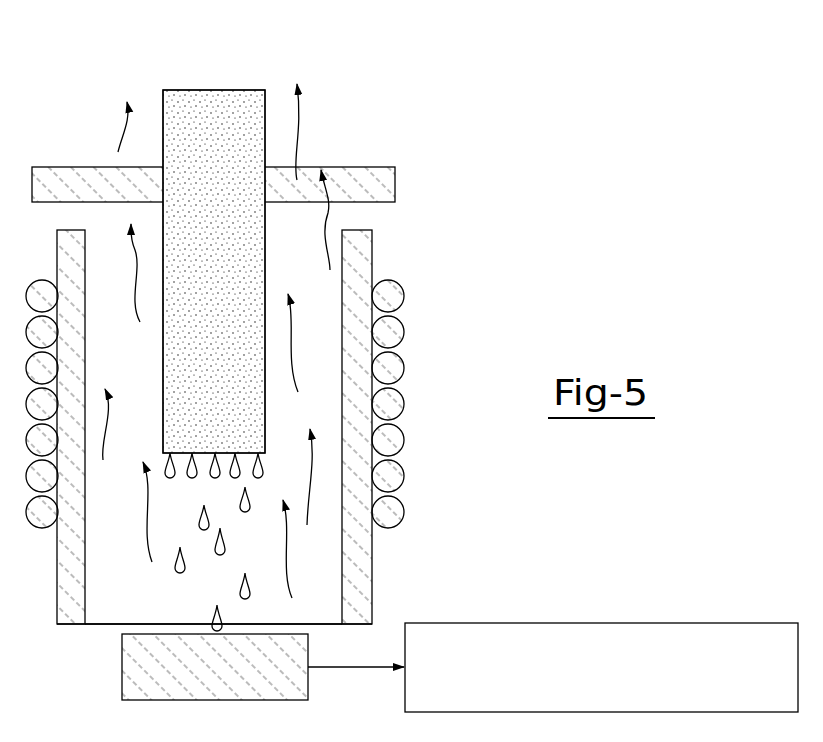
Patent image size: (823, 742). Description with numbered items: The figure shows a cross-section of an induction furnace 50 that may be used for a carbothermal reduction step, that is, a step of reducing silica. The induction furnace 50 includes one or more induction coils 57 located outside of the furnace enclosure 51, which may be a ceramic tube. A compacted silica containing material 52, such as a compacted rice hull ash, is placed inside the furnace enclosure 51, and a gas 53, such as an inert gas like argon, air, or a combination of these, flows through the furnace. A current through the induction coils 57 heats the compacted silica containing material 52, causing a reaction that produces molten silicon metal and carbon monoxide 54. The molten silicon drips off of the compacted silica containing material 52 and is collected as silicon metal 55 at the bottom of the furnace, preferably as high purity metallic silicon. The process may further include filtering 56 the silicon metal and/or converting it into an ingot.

The induction furnace 50 is at (86, 50).
The furnace enclosure 51 is at (368, 573).
The compacted silica containing material 52 is at (218, 89).
The gas 53 is at (149, 520).
The carbon monoxide 54 is at (121, 128).
The silicon metal 55 is at (122, 678).
The filtering 56 is at (526, 622).
The induction coils 57 is at (404, 372).